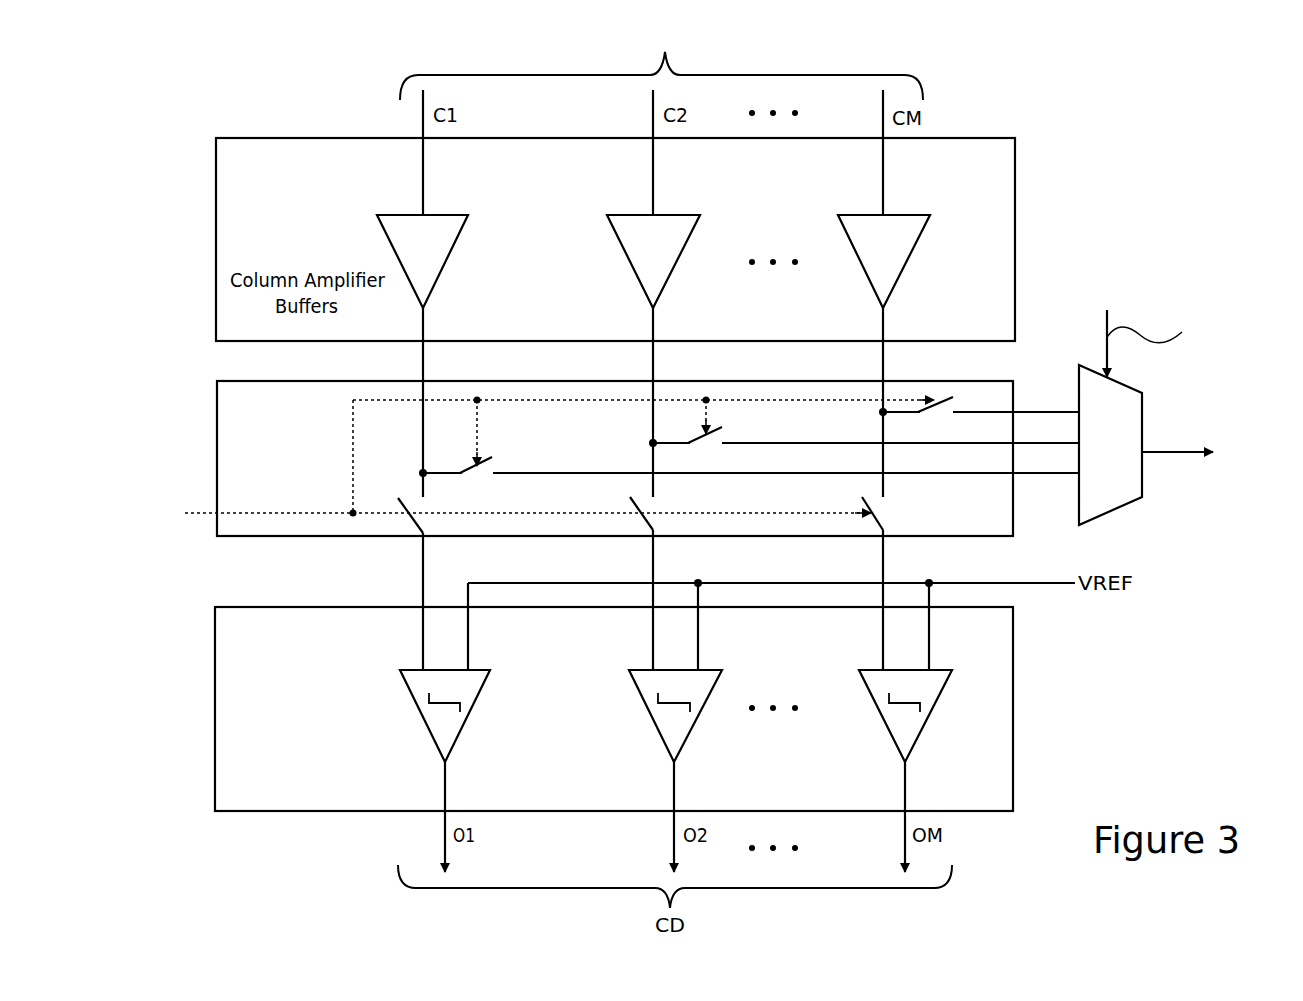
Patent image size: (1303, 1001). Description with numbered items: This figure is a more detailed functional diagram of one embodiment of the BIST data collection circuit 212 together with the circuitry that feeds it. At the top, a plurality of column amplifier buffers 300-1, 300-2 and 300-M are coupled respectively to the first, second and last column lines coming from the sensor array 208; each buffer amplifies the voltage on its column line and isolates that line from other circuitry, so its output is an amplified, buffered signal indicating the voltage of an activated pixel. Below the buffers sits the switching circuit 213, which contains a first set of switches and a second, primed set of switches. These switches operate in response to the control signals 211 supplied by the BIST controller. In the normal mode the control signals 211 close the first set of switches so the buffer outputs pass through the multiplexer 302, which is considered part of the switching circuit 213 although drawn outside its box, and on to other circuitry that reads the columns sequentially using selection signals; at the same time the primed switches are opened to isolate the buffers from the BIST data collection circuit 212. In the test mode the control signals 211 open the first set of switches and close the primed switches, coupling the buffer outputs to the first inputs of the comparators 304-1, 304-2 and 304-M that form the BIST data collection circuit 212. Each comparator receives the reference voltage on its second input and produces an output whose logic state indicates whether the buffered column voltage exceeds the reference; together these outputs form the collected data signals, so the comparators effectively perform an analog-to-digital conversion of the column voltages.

The sensor array 208 is at (661, 63).
The column amplifier buffer 300-1 is at (450, 263).
The column amplifier buffer 300-2 is at (678, 263).
The column amplifier buffer 300-M is at (907, 270).
The switching circuit 213 is at (287, 456).
The control signals 211 is at (199, 509).
The multiplexer 302 is at (1123, 466).
The BIST data collection circuit 212 is at (614, 709).
The comparator 304-1 is at (470, 712).
The comparator 304-2 is at (687, 727).
The comparator 304-M is at (933, 712).